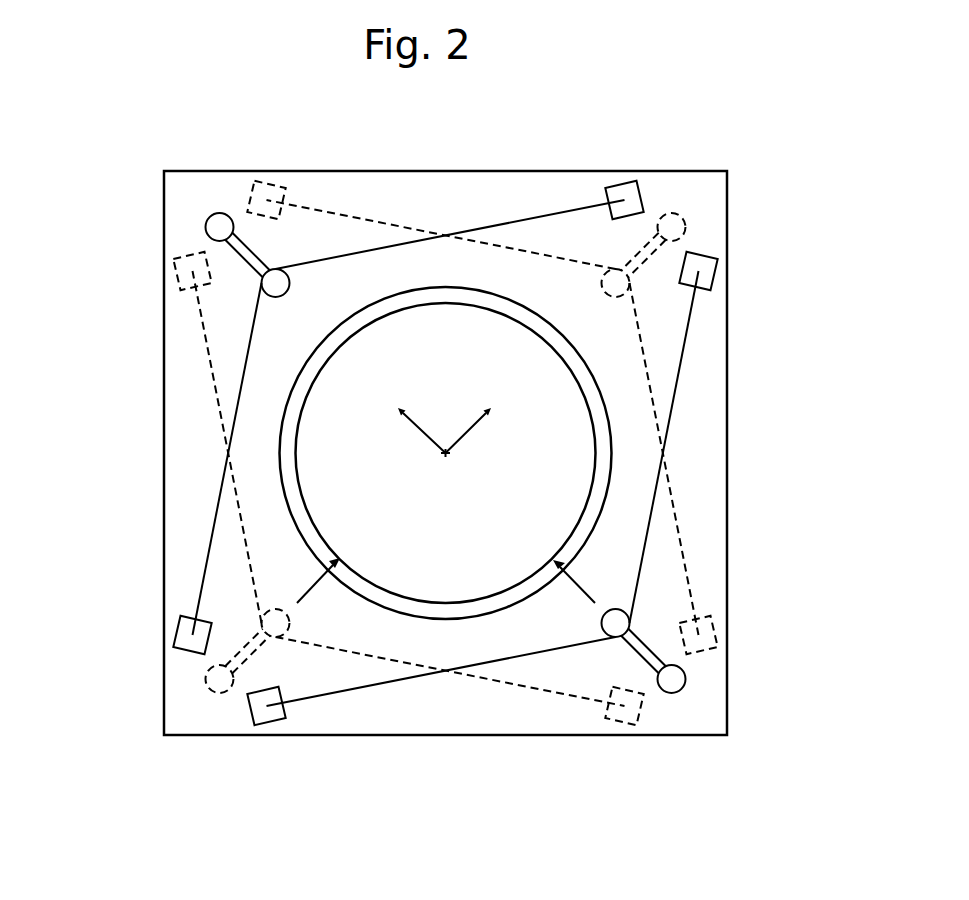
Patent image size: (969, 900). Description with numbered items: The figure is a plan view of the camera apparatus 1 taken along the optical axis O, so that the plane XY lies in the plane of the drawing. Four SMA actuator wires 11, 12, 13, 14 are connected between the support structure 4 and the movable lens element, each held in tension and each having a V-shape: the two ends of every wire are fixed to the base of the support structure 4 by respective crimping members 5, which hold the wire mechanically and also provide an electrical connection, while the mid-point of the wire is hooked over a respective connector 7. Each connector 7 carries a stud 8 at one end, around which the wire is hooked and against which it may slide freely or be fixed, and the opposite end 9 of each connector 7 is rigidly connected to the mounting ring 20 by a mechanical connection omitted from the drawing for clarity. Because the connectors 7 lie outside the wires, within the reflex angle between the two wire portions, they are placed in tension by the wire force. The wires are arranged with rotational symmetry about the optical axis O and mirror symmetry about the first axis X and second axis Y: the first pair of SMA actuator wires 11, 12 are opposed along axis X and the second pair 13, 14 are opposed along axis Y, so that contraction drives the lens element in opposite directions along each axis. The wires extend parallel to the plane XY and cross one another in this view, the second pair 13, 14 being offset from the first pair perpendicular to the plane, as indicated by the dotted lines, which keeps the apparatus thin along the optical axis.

The camera apparatus 1 is at (138, 242).
The support structure 4 is at (710, 334).
The crimping members 5 is at (267, 196).
The connectors 7 is at (243, 237).
The studs 8 is at (286, 272).
The ends of the connectors 9 is at (210, 217).
The SMA actuator wire 11 is at (677, 380).
The SMA actuator wire 12 is at (528, 219).
The SMA actuator wire 13 is at (485, 679).
The SMA actuator wire 14 is at (405, 227).
The mounting ring 20 is at (611, 446).